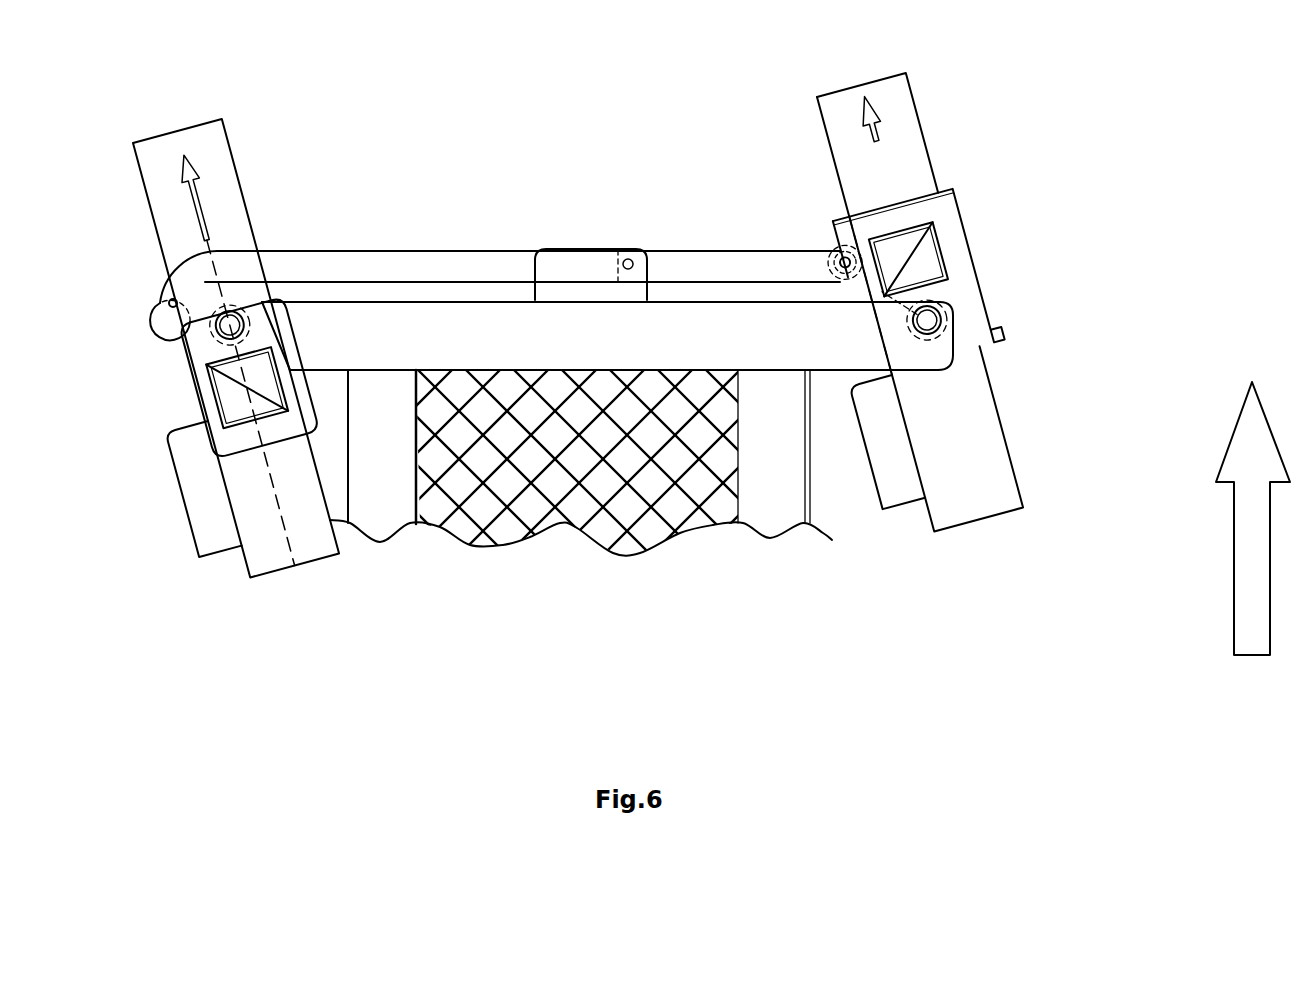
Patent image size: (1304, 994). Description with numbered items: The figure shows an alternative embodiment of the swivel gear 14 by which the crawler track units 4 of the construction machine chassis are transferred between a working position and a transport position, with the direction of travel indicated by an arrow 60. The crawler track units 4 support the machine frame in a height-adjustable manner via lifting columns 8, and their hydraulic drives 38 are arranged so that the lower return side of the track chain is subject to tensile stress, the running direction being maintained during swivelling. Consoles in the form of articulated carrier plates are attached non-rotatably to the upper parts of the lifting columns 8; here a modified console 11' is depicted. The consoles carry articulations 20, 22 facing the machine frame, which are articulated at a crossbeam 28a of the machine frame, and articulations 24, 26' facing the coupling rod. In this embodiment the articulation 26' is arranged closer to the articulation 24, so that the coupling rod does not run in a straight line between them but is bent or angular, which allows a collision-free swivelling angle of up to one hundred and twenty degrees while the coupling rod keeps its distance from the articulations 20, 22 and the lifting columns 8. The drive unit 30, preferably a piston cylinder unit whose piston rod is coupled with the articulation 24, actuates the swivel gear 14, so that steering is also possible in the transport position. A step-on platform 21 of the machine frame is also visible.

The crawler track units 4 is at (1052, 160).
The lifting columns 8 is at (947, 262).
The swivel gear 14 is at (592, 200).
The crossbeam 28a is at (523, 332).
The drive unit 30 is at (685, 245).
The articulation 24 is at (836, 265).
The articulation 22 is at (960, 289).
The articulation 20 is at (193, 348).
The articulation 26' is at (112, 256).
The modified console 11' is at (124, 301).
The hydraulic drives 38 is at (193, 482).
The step-on platform 21 is at (512, 452).
The arrow 60 is at (1256, 552).